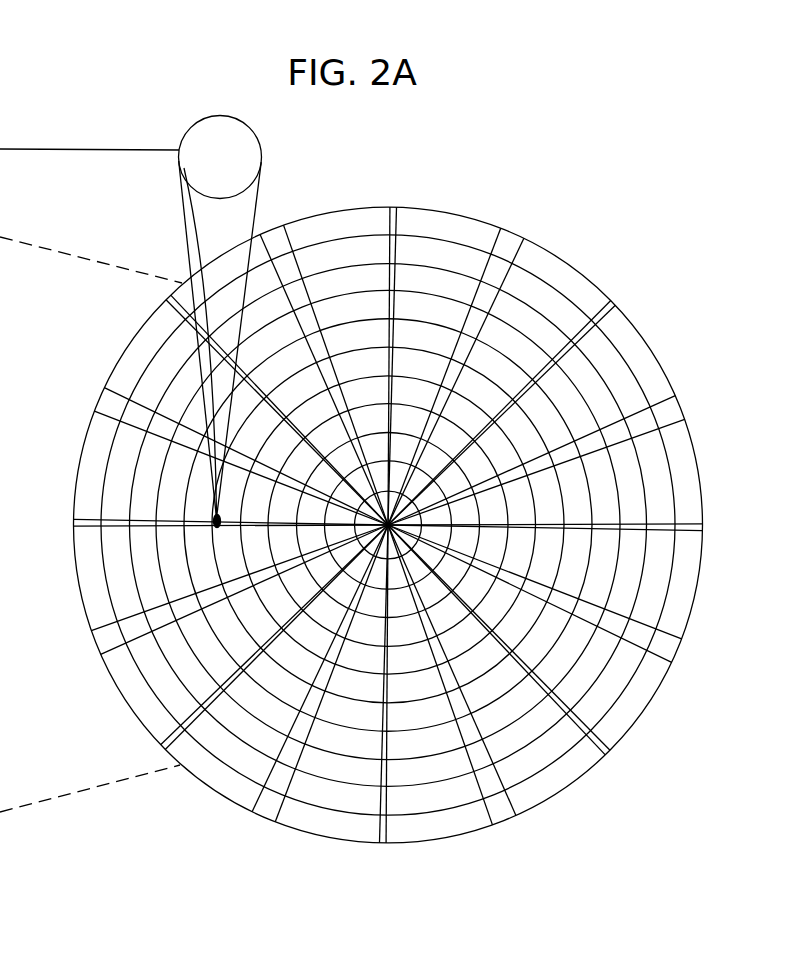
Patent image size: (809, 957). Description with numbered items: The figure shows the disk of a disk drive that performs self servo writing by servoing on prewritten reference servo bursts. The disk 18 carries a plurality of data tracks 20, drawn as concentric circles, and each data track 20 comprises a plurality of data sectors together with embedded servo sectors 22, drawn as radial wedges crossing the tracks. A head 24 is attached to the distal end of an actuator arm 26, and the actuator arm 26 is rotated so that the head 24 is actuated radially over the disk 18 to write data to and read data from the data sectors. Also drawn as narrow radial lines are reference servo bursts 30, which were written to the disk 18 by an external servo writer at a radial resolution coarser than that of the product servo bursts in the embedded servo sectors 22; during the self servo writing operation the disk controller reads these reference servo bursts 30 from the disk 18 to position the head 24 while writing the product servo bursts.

The disk 18 is at (560, 246).
The data tracks 20 is at (440, 255).
The embedded servo sectors 22 is at (276, 234).
The head 24 is at (214, 533).
The actuator arm 26 is at (185, 233).
The reference servo bursts 30 is at (391, 207).